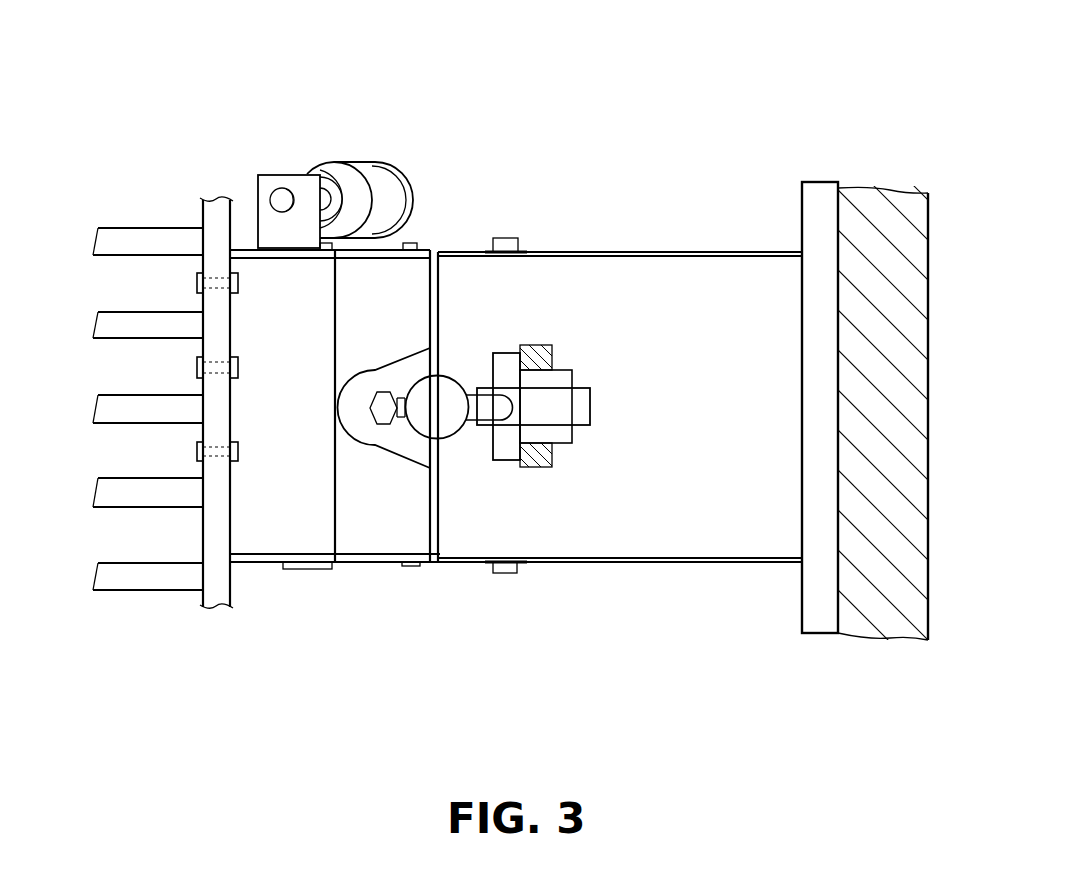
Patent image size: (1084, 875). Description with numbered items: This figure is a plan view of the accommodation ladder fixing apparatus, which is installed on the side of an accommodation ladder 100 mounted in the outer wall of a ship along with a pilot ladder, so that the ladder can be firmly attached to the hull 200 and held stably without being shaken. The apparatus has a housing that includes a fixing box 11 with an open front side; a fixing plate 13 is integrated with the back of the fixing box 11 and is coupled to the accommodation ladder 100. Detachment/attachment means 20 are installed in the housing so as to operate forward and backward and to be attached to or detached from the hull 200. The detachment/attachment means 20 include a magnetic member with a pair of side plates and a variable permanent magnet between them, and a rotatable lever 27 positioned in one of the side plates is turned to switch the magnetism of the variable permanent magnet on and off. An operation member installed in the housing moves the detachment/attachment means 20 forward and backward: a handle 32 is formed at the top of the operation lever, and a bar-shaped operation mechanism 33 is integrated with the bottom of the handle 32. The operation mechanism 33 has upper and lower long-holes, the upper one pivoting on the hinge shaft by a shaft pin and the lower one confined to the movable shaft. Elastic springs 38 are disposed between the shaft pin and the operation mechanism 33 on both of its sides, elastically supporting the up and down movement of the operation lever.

The accommodation ladder 100 is at (115, 228).
The hull 200 is at (880, 220).
The fixing box 11 is at (668, 292).
The fixing plate 13 is at (825, 590).
The detachment/attachment means 20 is at (334, 598).
The rotatable lever 27 is at (378, 180).
The handle 32 is at (487, 405).
The operation mechanism 33 is at (583, 398).
The elastic spring 38 is at (526, 347).